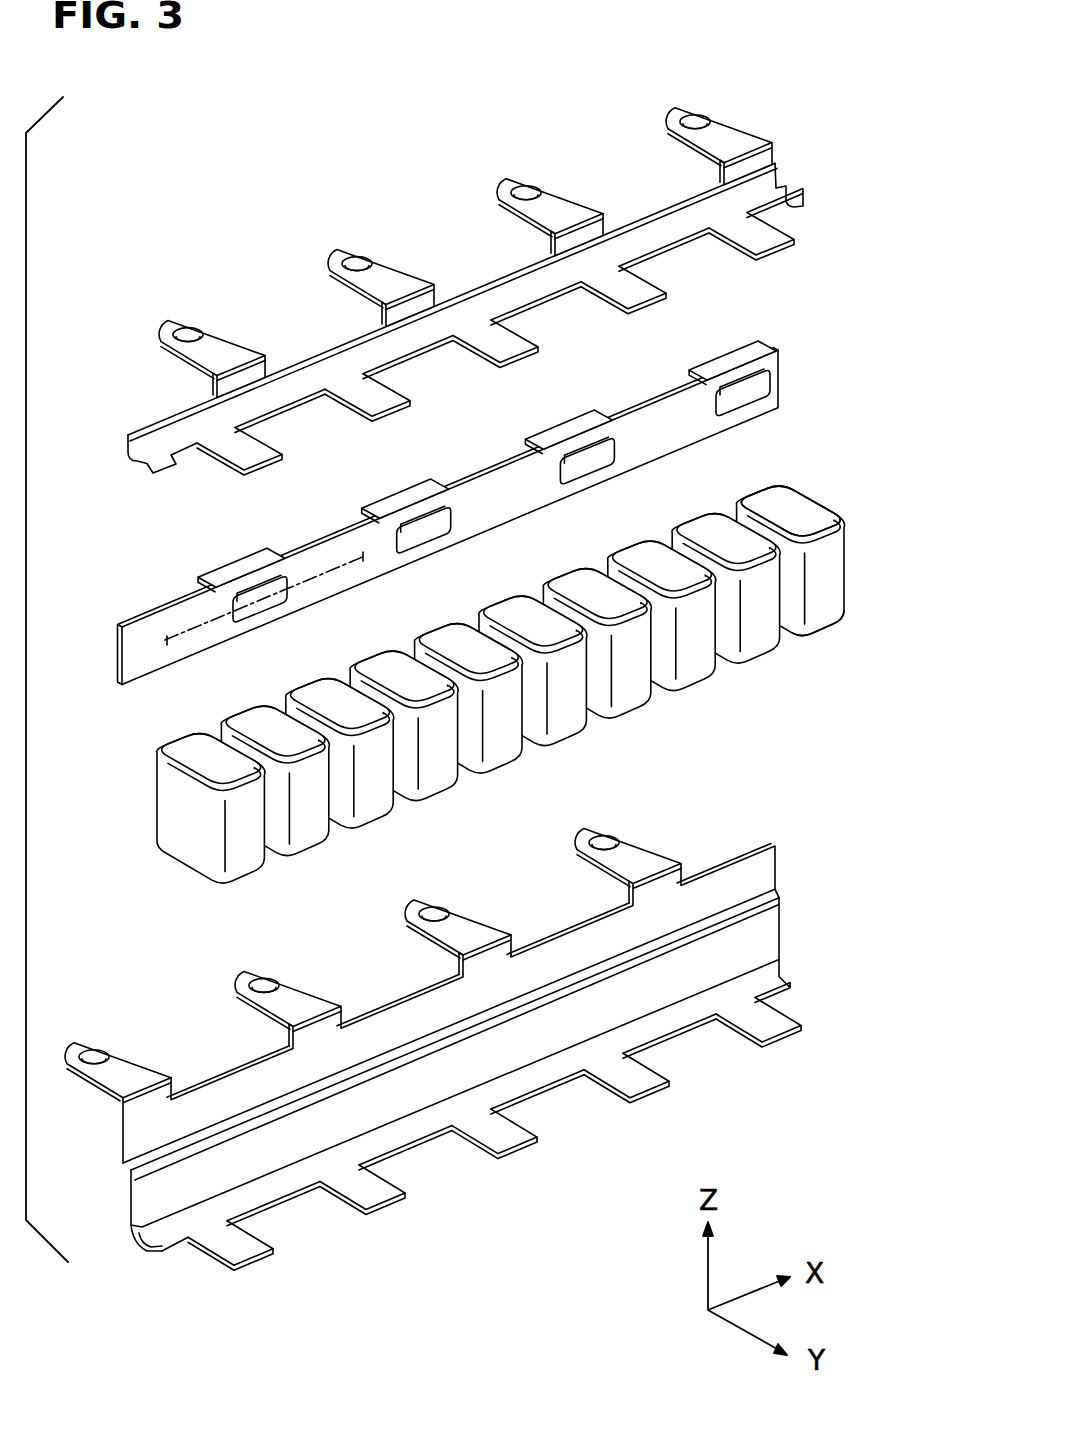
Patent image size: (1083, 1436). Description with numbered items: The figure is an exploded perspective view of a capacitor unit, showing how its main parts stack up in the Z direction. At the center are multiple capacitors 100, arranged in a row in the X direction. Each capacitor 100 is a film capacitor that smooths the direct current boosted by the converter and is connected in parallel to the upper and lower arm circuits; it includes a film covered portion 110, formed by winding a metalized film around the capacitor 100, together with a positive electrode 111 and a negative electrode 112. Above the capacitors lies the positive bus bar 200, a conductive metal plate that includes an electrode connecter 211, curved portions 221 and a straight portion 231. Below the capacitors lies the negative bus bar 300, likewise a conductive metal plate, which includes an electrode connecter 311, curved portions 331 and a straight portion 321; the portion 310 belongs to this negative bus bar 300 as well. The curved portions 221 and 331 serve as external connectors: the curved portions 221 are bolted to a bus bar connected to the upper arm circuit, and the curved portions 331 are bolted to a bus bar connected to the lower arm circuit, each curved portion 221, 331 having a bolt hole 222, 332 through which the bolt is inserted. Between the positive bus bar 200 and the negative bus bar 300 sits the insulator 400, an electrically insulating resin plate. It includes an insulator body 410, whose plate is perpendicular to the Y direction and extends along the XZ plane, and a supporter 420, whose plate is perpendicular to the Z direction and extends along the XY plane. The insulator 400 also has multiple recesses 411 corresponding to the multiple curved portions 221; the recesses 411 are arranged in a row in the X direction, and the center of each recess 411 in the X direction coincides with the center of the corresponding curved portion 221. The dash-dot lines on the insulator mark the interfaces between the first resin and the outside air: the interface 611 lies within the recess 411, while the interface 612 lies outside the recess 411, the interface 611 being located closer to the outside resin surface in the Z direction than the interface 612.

The capacitor 100 is at (542, 662).
The film covered portion 110 is at (822, 600).
The positive electrode 111 is at (802, 512).
The negative electrode 112 is at (803, 638).
The positive bus bar 200 is at (781, 183).
The electrode connecter 211 is at (237, 451).
The curved portion 221 is at (212, 348).
The bolt hole 222 is at (188, 334).
The straight portion 231 is at (447, 302).
The negative bus bar 300 is at (455, 1040).
The base portion of second bus bar 310 is at (783, 966).
The electrode connecter 311 is at (230, 1246).
The straight portion 321 is at (326, 1044).
The curved portion 331 is at (118, 1070).
The bolt hole 332 is at (94, 1056).
The insulator 400 is at (478, 514).
The insulator body 410 is at (140, 668).
The recess 411 is at (268, 602).
The supporter 420 is at (241, 567).
The interface 611 is at (232, 618).
The interface 612 is at (175, 645).